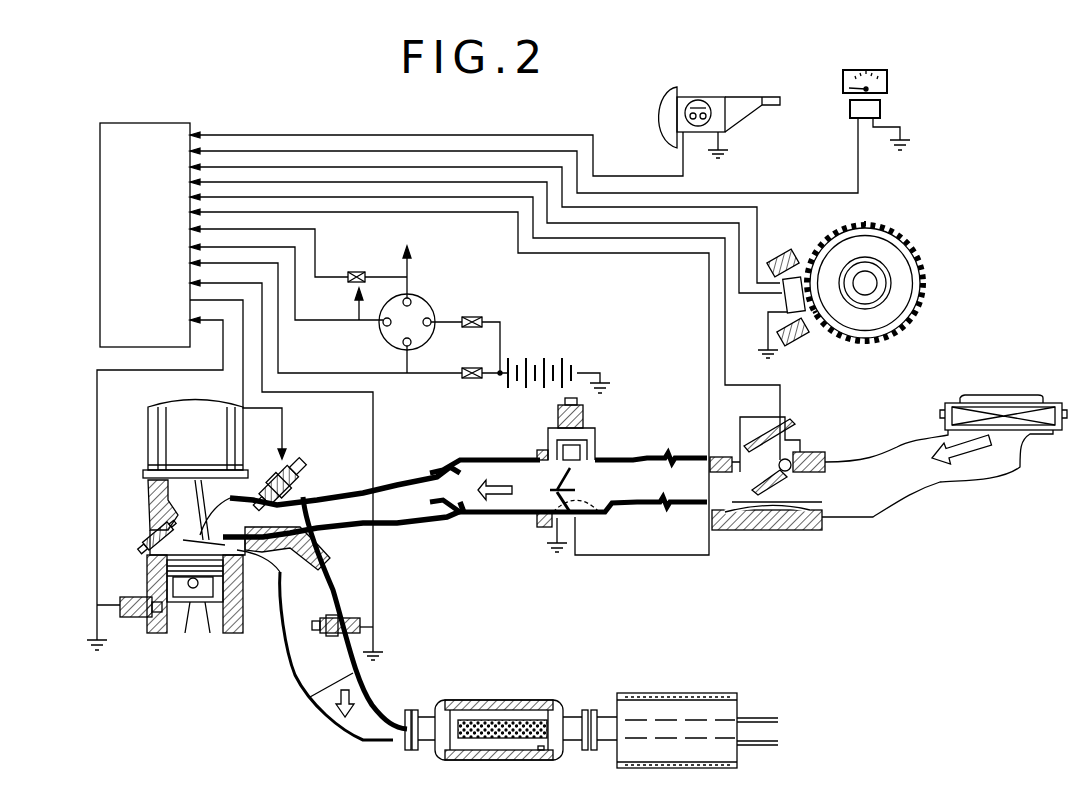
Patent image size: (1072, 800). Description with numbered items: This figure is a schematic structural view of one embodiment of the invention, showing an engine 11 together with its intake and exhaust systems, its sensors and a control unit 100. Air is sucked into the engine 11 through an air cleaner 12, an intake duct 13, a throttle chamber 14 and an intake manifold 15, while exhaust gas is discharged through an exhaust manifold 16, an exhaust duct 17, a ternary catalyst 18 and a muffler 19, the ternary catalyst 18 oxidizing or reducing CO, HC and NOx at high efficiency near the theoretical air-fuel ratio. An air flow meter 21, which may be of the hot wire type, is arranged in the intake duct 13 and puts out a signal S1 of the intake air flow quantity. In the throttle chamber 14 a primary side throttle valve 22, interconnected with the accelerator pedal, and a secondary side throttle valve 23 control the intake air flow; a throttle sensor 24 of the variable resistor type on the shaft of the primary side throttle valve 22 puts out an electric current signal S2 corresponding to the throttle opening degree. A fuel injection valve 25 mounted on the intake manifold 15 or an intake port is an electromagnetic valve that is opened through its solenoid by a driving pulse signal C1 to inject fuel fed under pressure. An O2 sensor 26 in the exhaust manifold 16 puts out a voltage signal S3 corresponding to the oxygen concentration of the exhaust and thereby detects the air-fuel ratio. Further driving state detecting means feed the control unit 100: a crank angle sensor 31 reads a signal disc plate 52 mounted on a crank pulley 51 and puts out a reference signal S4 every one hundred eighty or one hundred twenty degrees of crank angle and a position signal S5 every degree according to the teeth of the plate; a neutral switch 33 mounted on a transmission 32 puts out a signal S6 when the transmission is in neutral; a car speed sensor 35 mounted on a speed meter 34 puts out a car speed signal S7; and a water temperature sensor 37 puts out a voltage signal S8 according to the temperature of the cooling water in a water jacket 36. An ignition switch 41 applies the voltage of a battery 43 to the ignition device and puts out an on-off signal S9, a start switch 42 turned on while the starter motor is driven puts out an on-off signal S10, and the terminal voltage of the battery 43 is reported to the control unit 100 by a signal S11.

The control unit 100 is at (162, 123).
The engine 11 is at (148, 432).
The air cleaner 12 is at (1008, 395).
The intake duct 13 is at (862, 518).
The throttle chamber 14 is at (500, 516).
The intake manifold 15 is at (396, 525).
The exhaust manifold 16 is at (292, 672).
The exhaust duct 17 is at (395, 712).
The ternary catalyst 18 is at (520, 698).
The muffler 19 is at (702, 693).
The air flow meter 21 is at (748, 435).
The primary side throttle valve 22 is at (566, 522).
The secondary side throttle valve 23 is at (575, 470).
The throttle sensor 24 is at (600, 520).
The fuel injection valve 25 is at (300, 460).
The O2 sensor 26 is at (342, 615).
The crank angle sensor 31 is at (795, 258).
The transmission 32 is at (725, 100).
The neutral switch 33 is at (698, 100).
The speed meter 34 is at (888, 84).
The car speed sensor 35 is at (881, 110).
The water jacket 36 is at (157, 620).
The water temperature sensor 37 is at (130, 618).
The ignition switch 41 is at (411, 290).
The start switch 42 is at (386, 336).
The battery 43 is at (549, 360).
The crank pulley 51 is at (900, 258).
The signal disc plate 52 is at (885, 225).
The flow quantity signal S1 is at (757, 385).
The throttle opening signal S2 is at (672, 555).
The O2 sensor voltage signal S3 is at (373, 585).
The reference signal S4 is at (750, 293).
The position signal S5 is at (768, 282).
The neutral signal S6 is at (633, 176).
The car speed signal S7 is at (820, 193).
The water temperature signal S8 is at (148, 532).
The ignition on-off signal S9 is at (385, 277).
The start on-off signal S10 is at (330, 320).
The battery voltage signal S11 is at (310, 373).
The driving pulse signal C1 is at (262, 408).